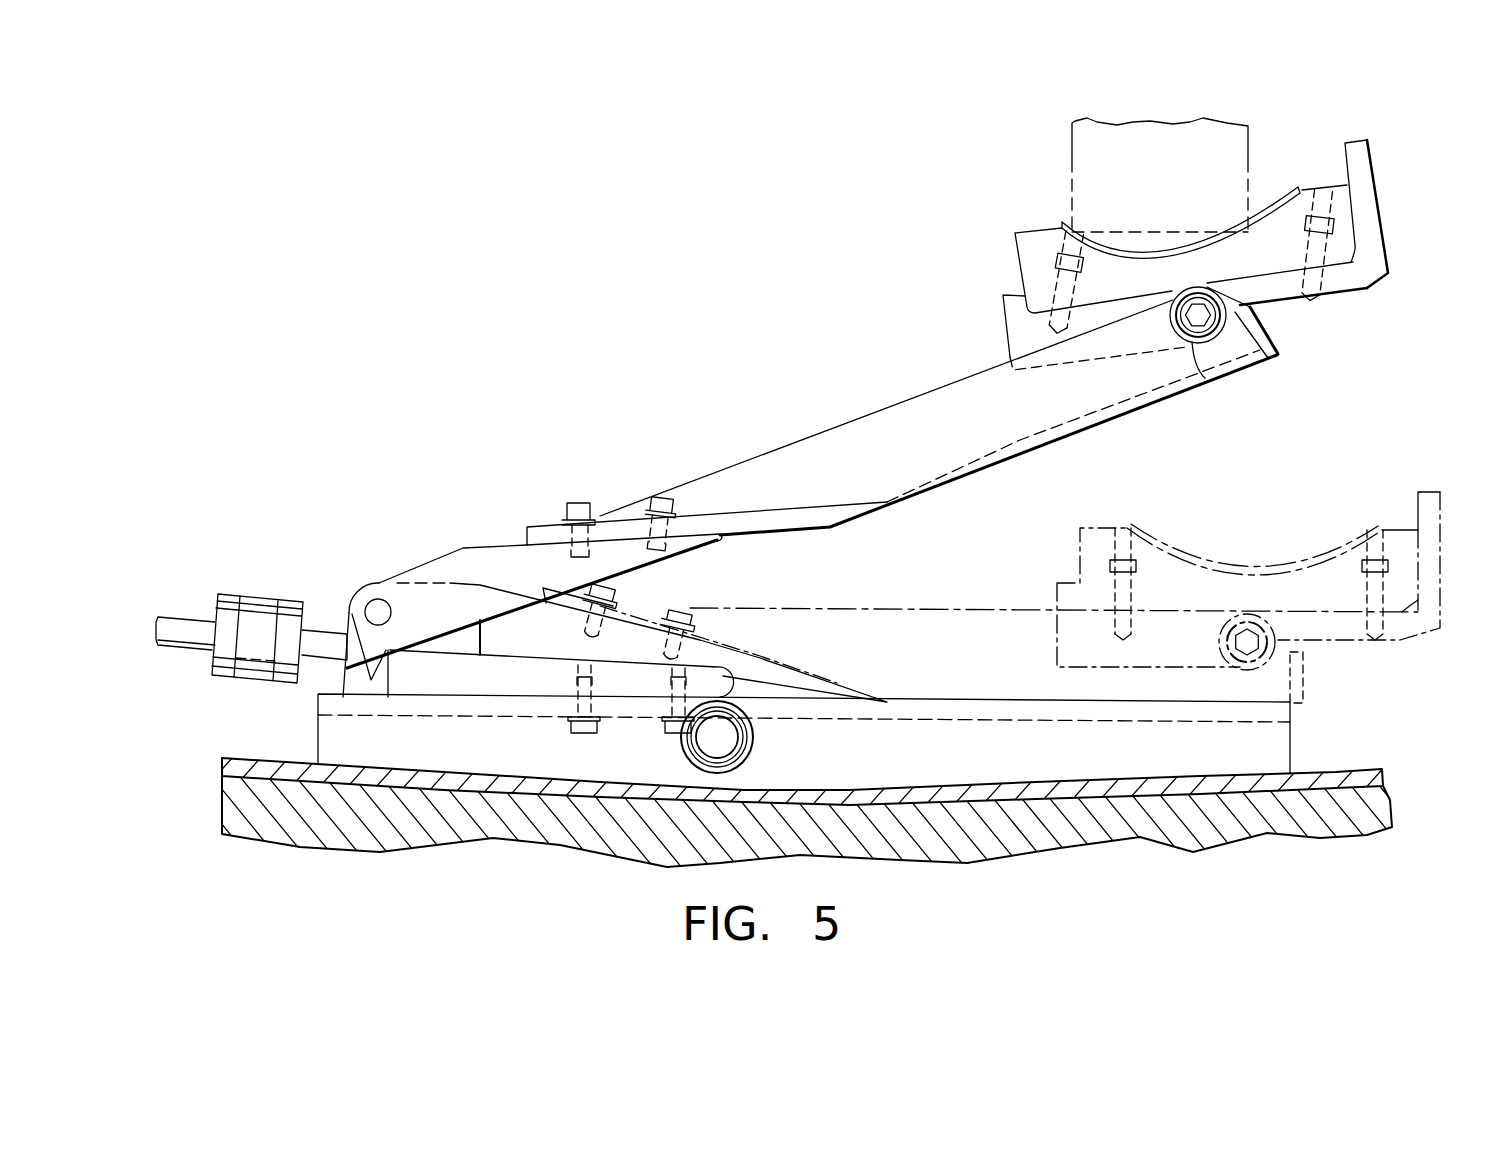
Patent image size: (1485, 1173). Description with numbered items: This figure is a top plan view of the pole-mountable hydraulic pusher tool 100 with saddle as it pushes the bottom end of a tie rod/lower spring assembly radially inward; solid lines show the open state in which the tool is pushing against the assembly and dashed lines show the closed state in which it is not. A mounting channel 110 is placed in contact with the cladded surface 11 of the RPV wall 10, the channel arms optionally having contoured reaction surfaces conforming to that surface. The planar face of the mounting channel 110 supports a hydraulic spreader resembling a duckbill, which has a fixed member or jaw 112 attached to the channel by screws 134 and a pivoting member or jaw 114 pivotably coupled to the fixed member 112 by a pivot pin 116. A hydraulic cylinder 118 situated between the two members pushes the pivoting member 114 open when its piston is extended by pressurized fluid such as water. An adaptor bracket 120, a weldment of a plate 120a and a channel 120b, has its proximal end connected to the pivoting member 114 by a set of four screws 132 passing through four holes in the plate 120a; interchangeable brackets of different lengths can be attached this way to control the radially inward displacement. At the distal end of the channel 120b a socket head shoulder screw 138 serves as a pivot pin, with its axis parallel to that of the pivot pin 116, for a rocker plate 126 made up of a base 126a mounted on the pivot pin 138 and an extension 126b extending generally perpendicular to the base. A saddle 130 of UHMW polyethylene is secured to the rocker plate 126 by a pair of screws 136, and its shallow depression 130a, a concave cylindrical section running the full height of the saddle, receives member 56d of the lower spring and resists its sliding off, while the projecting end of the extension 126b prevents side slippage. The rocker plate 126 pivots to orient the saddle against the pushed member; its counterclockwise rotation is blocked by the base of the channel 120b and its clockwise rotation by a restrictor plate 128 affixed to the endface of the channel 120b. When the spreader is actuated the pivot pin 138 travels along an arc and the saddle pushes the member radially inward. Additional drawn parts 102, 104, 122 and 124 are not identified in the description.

The RPV wall 10 is at (1070, 838).
The cladded surface 11 is at (997, 783).
The member of the lower spring 56d is at (1072, 165).
The pusher tool 100 is at (758, 358).
The grommet ring 102 is at (760, 742).
The mounting hole 104 is at (727, 738).
The mounting channel 110 is at (1277, 750).
The fixed member 112 is at (415, 687).
The pivoting member 114 is at (472, 547).
The pivot pin 116 is at (378, 606).
The hydraulic cylinder 118 is at (483, 638).
The adaptor bracket 120 is at (766, 443).
The plate 120a is at (758, 512).
The channel 120b is at (1040, 430).
The threaded rod 122 is at (170, 614).
The adjustment nut 124 is at (264, 594).
The rocker plate 126 is at (1192, 403).
The base 126a is at (1283, 295).
The extension 126b is at (1363, 158).
The restrictor plate 128 is at (1277, 354).
The saddle 130 is at (1222, 362).
The shallow depression 130a is at (1195, 248).
The screws 132 is at (577, 503).
The screws 134 is at (663, 733).
The screws 136 is at (1053, 237).
The socket head shoulder screw 138 is at (1205, 378).